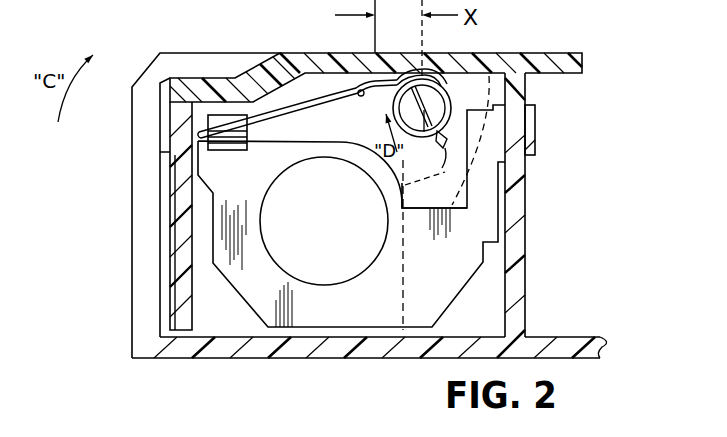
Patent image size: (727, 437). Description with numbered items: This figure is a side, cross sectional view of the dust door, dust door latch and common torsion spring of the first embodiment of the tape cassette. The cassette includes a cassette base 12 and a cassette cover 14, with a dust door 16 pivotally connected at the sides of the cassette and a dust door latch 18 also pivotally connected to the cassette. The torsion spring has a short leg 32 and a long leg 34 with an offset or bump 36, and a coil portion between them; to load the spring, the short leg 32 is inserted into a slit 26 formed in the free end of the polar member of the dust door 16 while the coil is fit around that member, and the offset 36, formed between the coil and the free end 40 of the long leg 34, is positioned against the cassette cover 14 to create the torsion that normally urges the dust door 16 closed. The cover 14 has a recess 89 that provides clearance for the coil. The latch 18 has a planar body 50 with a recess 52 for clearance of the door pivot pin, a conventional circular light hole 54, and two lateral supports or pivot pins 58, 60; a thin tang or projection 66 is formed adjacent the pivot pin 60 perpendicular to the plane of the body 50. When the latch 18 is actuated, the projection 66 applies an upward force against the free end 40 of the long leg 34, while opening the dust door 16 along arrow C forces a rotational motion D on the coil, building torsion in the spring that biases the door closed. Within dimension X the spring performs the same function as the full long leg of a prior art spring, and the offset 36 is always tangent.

The cassette base 12 is at (337, 358).
The cassette cover 14 is at (565, 57).
The dust door 16 is at (133, 287).
The dust door latch 18 is at (465, 298).
The slit 26 is at (427, 138).
The short leg 32 is at (444, 164).
The long leg 34 is at (307, 108).
The offset 36 is at (350, 54).
The free end 40 is at (243, 120).
The planar body 50 is at (455, 281).
The recess 52 is at (438, 208).
The circular light hole 54 is at (268, 256).
The pivot pin 58 is at (535, 135).
The pivot pin 60 is at (160, 152).
The projection 66 is at (223, 150).
The recess 89 is at (458, 96).